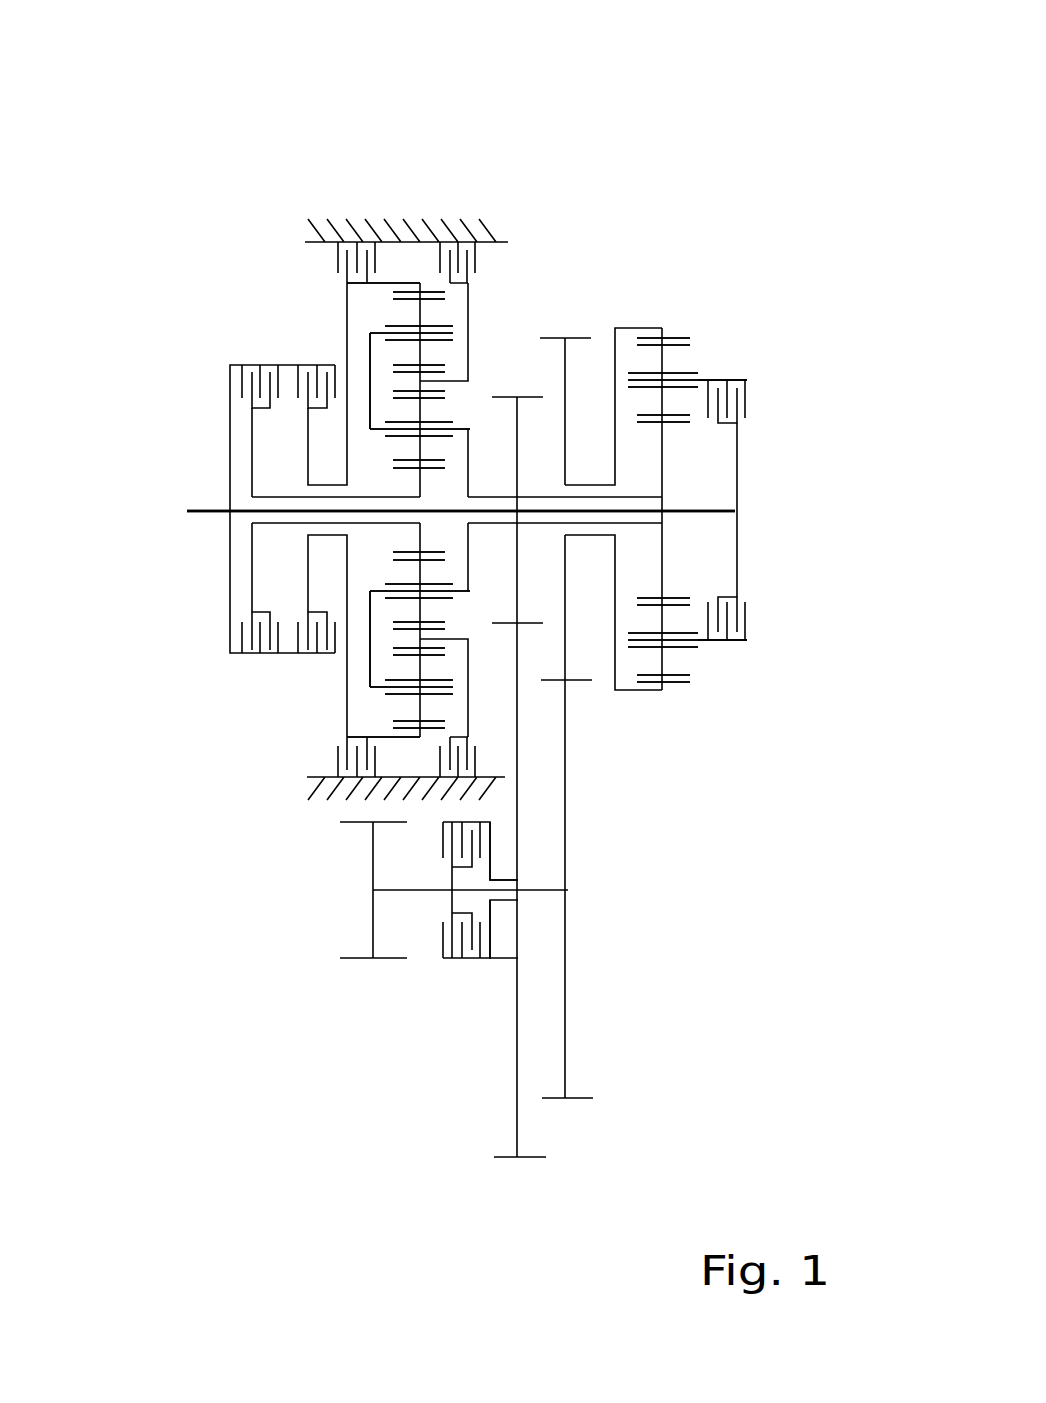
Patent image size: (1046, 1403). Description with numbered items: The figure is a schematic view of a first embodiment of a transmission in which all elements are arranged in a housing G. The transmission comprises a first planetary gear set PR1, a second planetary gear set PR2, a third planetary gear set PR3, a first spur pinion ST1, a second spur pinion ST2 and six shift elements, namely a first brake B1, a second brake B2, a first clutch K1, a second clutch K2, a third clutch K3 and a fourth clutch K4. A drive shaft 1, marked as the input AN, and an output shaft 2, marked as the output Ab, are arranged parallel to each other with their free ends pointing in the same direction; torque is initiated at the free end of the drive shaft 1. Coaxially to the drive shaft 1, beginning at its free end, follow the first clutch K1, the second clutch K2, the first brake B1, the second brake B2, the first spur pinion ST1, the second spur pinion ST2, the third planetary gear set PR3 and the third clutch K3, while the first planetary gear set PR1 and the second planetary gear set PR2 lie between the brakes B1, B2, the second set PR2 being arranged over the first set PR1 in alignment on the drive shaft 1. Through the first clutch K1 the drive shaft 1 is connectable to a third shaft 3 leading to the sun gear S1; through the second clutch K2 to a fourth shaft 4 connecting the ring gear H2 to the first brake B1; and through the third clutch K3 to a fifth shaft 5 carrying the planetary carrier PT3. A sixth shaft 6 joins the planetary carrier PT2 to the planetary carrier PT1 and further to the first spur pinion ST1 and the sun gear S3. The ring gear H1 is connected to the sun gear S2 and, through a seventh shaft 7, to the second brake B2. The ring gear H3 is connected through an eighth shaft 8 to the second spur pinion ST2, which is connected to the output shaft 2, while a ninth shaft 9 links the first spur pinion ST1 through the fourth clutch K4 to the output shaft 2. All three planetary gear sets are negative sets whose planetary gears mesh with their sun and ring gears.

The drive shaft 1 is at (700, 511).
The output shaft 2 is at (397, 893).
The third shaft 3 is at (250, 468).
The fourth shaft 4 is at (393, 283).
The fifth shaft 5 is at (700, 377).
The sixth shaft 6 is at (665, 462).
The seventh shaft 7 is at (468, 713).
The eighth shaft 8 is at (628, 327).
The ninth shaft 9 is at (493, 930).
The input (drive) AN is at (230, 512).
The output Ab is at (340, 958).
The housing G is at (295, 813).
The first clutch K1 is at (253, 357).
The second clutch K2 is at (310, 350).
The third clutch K3 is at (728, 373).
The fourth clutch K4 is at (467, 968).
The first brake B1 is at (352, 208).
The second brake B2 is at (457, 208).
The first planetary gear set PR1 is at (393, 413).
The second planetary gear set PR2 is at (447, 312).
The third planetary gear set PR3 is at (660, 308).
The sun gear S1 is at (413, 557).
The sun gear S2 is at (433, 657).
The sun gear S3 is at (673, 593).
The planetary carrier PT1 is at (405, 602).
The planetary carrier PT2 is at (415, 690).
The planetary carrier PT3 is at (680, 650).
The ring gear H1 is at (420, 632).
The ring gear H2 is at (435, 728).
The ring gear H3 is at (675, 685).
The first spur pinion ST1 is at (516, 365).
The second spur pinion ST2 is at (565, 308).